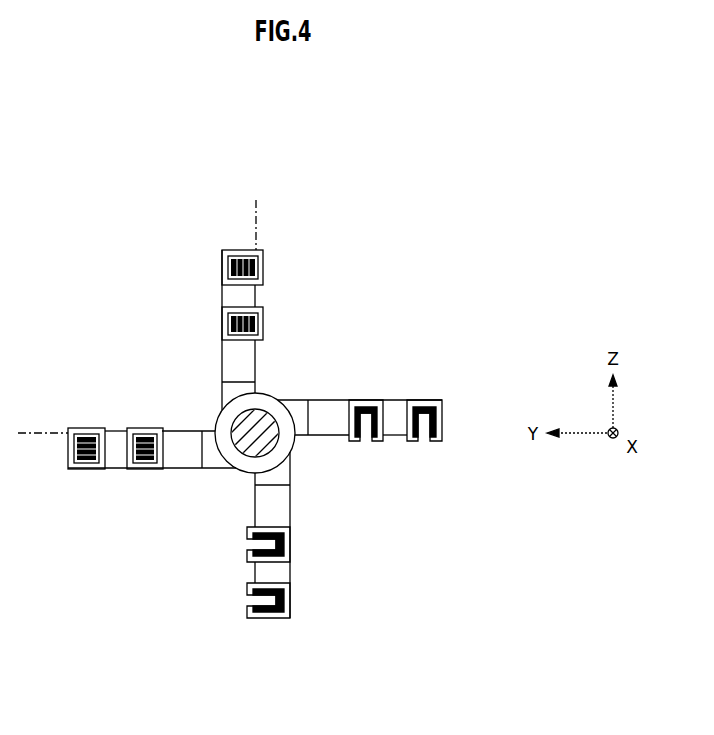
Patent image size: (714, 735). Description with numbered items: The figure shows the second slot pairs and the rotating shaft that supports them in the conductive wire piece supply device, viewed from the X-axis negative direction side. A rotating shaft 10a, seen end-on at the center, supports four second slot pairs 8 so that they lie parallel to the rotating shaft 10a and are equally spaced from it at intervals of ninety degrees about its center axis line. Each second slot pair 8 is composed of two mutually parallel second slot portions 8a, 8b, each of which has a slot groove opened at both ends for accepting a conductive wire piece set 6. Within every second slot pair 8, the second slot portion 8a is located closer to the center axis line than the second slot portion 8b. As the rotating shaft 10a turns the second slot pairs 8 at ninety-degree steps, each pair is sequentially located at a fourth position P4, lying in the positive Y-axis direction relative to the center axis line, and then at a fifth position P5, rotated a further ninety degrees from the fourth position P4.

The conductive wire piece set 6 is at (263, 270).
The second slot pair 8 is at (255, 434).
The second slot portion 8a is at (222, 325).
The second slot portion 8b is at (169, 340).
The rotating shaft 10a is at (265, 412).
The fourth position P4 is at (43, 429).
The fifth position P5 is at (260, 225).